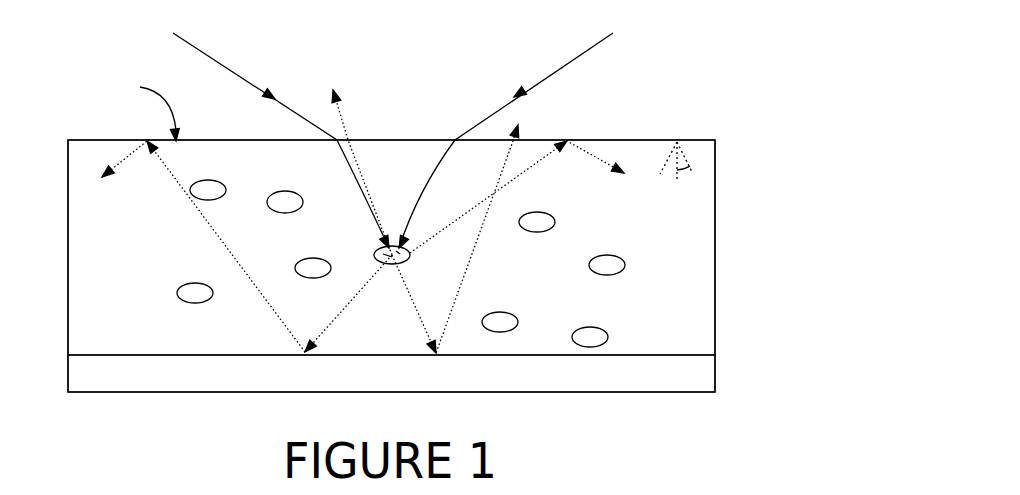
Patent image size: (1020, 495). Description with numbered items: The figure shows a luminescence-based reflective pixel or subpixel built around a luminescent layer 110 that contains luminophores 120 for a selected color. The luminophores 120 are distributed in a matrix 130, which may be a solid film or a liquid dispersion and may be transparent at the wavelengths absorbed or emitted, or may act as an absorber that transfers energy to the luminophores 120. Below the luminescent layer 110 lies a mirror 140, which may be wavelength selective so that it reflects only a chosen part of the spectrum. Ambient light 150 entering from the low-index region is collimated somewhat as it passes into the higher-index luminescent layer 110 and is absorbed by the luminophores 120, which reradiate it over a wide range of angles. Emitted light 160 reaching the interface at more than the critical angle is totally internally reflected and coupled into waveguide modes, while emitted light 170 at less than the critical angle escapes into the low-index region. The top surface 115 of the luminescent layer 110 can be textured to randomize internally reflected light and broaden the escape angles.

The luminescent layer 110 is at (728, 228).
The top surface 115 is at (133, 110).
The luminophores 120 is at (390, 255).
The matrix 130 is at (143, 313).
The mirror 140 is at (704, 373).
The ambient light 150 is at (208, 55).
The emitted light 160 is at (162, 172).
The emitted light 170 is at (346, 128).